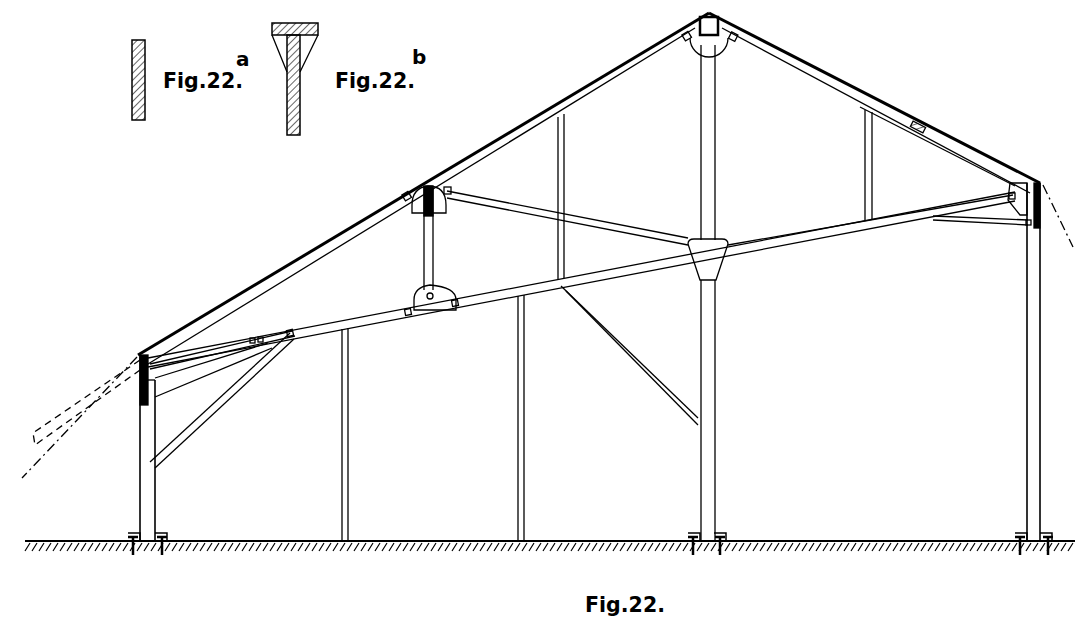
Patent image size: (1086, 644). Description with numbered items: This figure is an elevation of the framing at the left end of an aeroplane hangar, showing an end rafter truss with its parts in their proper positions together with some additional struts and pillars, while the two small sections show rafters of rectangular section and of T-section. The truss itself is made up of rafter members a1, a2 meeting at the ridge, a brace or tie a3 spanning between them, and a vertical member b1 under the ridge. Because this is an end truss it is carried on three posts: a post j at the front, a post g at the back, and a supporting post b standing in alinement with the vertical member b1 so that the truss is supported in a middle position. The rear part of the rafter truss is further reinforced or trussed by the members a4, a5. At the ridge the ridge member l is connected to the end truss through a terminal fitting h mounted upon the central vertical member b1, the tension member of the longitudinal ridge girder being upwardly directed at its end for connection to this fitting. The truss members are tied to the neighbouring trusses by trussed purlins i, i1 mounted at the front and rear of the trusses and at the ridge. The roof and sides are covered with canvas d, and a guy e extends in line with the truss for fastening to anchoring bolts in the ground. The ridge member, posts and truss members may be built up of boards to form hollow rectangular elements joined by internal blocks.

The rafter member a1 is at (333, 250).
The rafter member a2 is at (831, 84).
The brace or tie a3 is at (838, 244).
The reinforcing member a4 is at (434, 236).
The reinforcing member a5 is at (586, 218).
The supporting post b is at (714, 322).
The vertical member b1 is at (714, 125).
The canvas d is at (396, 200).
The guy e is at (75, 420).
The post g is at (148, 465).
The terminal fitting h is at (722, 33).
The trussed purlin i is at (140, 357).
The trussed purlin i1 is at (1051, 185).
The post j is at (1027, 368).
The ridge member l is at (728, 17).